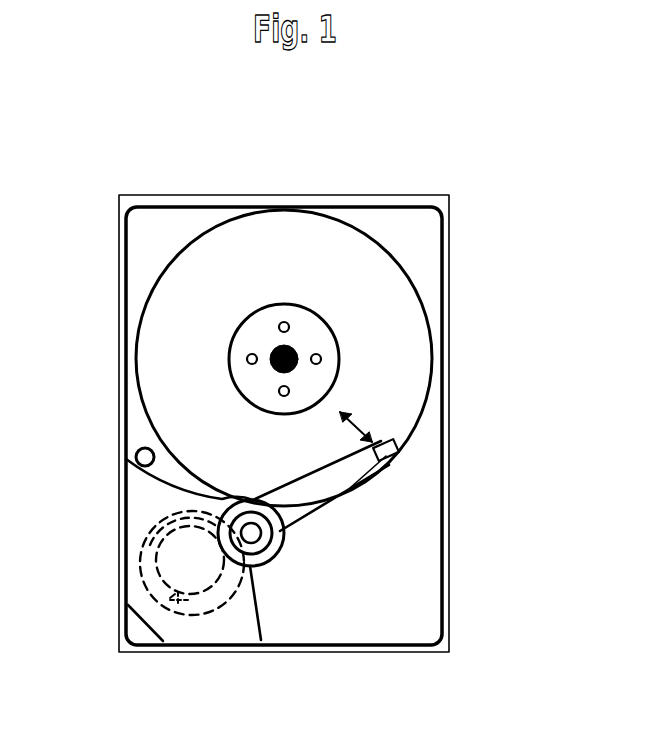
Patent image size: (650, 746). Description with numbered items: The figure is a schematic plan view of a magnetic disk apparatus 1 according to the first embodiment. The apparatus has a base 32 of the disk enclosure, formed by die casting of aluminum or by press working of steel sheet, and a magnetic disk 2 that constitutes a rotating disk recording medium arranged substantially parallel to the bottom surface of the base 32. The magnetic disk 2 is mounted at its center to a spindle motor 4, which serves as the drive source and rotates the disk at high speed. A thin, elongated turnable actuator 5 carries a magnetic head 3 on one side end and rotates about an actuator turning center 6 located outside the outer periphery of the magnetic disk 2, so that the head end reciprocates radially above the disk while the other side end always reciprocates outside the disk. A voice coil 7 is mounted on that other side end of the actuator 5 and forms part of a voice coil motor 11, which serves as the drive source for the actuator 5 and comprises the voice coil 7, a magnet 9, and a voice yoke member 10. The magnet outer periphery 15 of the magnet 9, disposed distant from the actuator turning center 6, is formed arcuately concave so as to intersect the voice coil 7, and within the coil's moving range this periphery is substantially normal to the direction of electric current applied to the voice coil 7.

The magnetic disk apparatus 1 is at (145, 198).
The base 32 is at (408, 200).
The magnetic disk 2 is at (418, 338).
The spindle motor 4 is at (317, 338).
The magnetic head 3 is at (392, 458).
The actuator 5 is at (335, 497).
The actuator turning center 6 is at (252, 533).
The voice coil 7 is at (170, 598).
The magnet 9 is at (152, 530).
The magnet outer periphery 15 is at (178, 568).
The voice yoke member 10 is at (148, 478).
The voice coil motor 11 is at (251, 628).